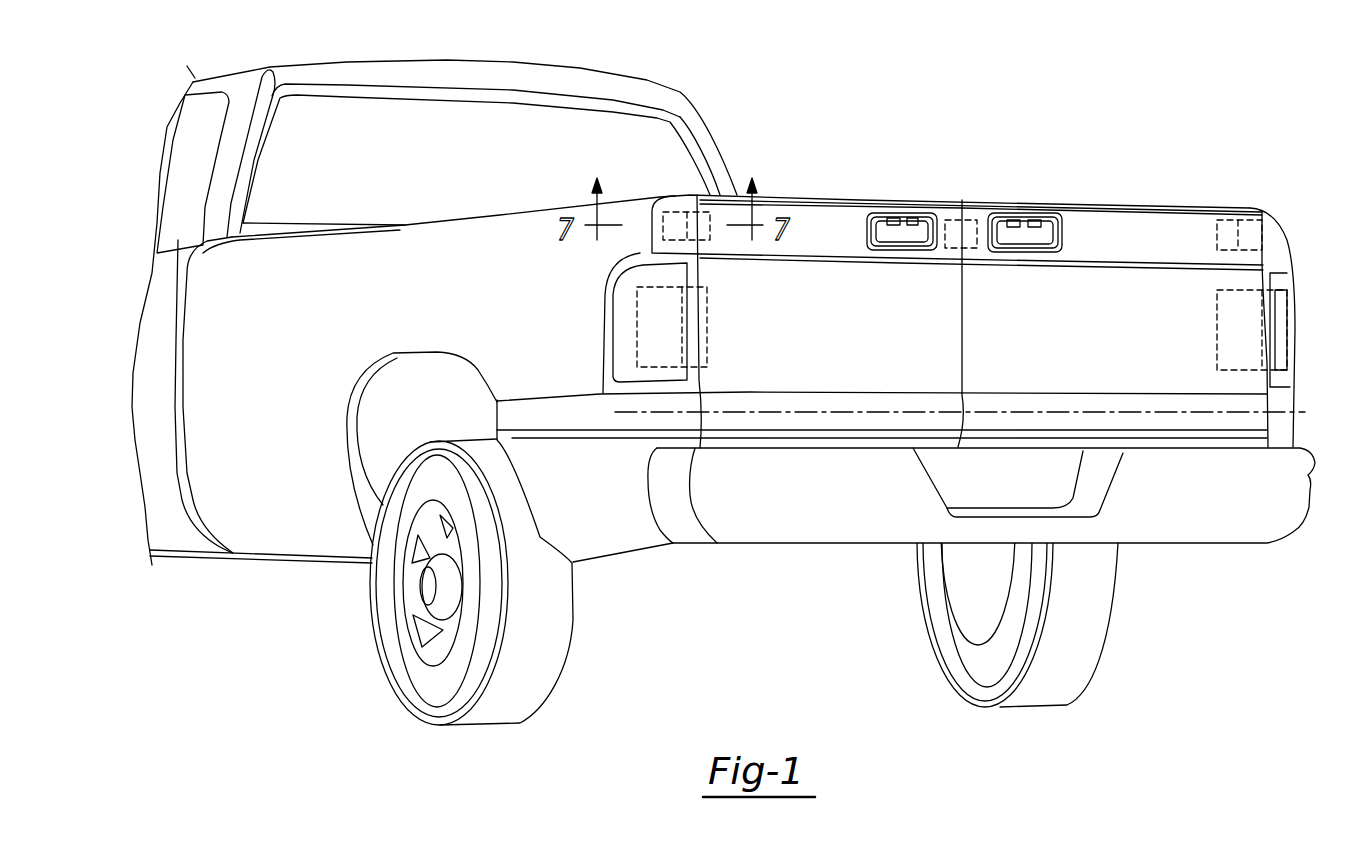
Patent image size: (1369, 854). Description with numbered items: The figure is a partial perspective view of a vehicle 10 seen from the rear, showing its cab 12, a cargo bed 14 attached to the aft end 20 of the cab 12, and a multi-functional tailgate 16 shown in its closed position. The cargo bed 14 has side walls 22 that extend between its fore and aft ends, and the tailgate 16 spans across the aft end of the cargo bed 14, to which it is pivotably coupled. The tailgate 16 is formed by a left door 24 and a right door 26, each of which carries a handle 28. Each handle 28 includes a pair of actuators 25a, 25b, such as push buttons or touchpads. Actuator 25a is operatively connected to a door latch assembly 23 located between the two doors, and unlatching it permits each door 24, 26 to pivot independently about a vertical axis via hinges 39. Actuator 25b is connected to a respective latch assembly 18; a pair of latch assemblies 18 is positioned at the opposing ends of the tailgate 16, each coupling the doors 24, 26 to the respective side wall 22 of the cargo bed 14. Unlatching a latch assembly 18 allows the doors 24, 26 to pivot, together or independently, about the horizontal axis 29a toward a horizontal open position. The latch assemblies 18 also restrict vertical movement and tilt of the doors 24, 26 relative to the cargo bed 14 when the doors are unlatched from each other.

The vehicle 10 is at (793, 67).
The cab 12 is at (637, 70).
The cargo bed 14 is at (745, 573).
The multi-functional tailgate 16 is at (1235, 200).
The latch assembly 18 is at (668, 208).
The aft end 20 is at (213, 558).
The side wall 22 is at (275, 538).
The door latch assembly 23 is at (977, 218).
The left door 24 is at (822, 210).
The actuator 25a is at (893, 214).
The actuator 25b is at (912, 214).
The right door 26 is at (1137, 215).
The handle 28 is at (895, 262).
The horizontal axis 29a is at (1303, 410).
The hinge 39 is at (650, 326).